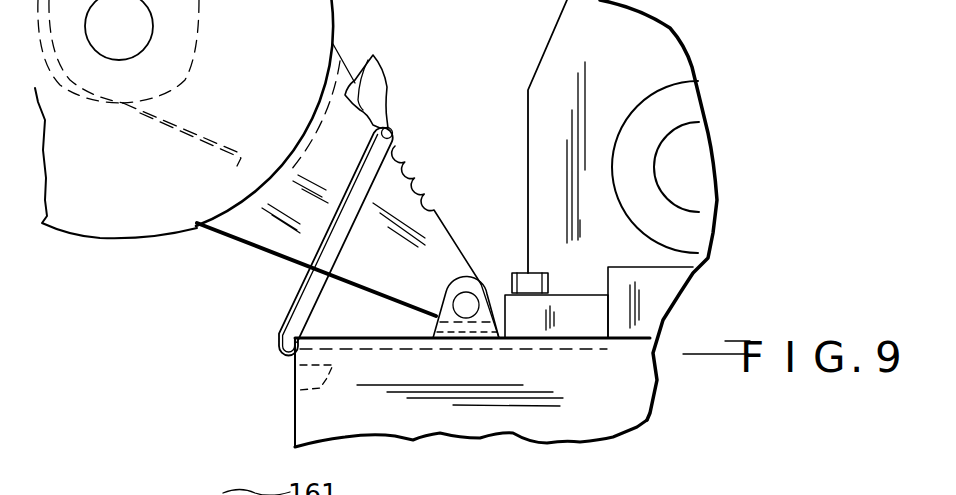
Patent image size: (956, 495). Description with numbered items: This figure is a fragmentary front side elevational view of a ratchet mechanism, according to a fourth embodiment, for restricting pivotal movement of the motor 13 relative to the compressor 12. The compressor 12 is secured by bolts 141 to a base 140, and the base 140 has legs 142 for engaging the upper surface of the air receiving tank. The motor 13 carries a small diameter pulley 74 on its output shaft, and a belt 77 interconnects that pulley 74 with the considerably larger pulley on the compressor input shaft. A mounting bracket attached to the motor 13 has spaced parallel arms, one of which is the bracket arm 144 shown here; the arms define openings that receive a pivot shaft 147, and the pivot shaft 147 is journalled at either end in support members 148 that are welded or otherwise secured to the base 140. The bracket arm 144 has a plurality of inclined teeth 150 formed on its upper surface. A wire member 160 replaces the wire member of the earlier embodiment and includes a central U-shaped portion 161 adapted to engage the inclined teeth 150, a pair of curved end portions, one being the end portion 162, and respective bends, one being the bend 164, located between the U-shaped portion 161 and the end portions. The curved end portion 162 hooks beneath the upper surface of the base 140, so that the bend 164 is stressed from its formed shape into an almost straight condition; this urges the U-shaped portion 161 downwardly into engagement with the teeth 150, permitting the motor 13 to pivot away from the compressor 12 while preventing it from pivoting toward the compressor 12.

The compressor 12 is at (657, 50).
The motor 13 is at (109, 223).
The small diameter pulley 74 is at (194, 57).
The belt 77 is at (190, 124).
The base 140 is at (378, 333).
The bolts 141 is at (530, 285).
The legs 142 is at (623, 403).
The bracket arm 144 is at (258, 229).
The pivot shaft 147 is at (466, 305).
The support members 148 is at (499, 338).
The inclined teeth 150 is at (372, 58).
The wire member 160 is at (397, 138).
The U-shaped portion 161 is at (393, 126).
The curved end portion 162 is at (293, 390).
The bend 164 is at (356, 226).